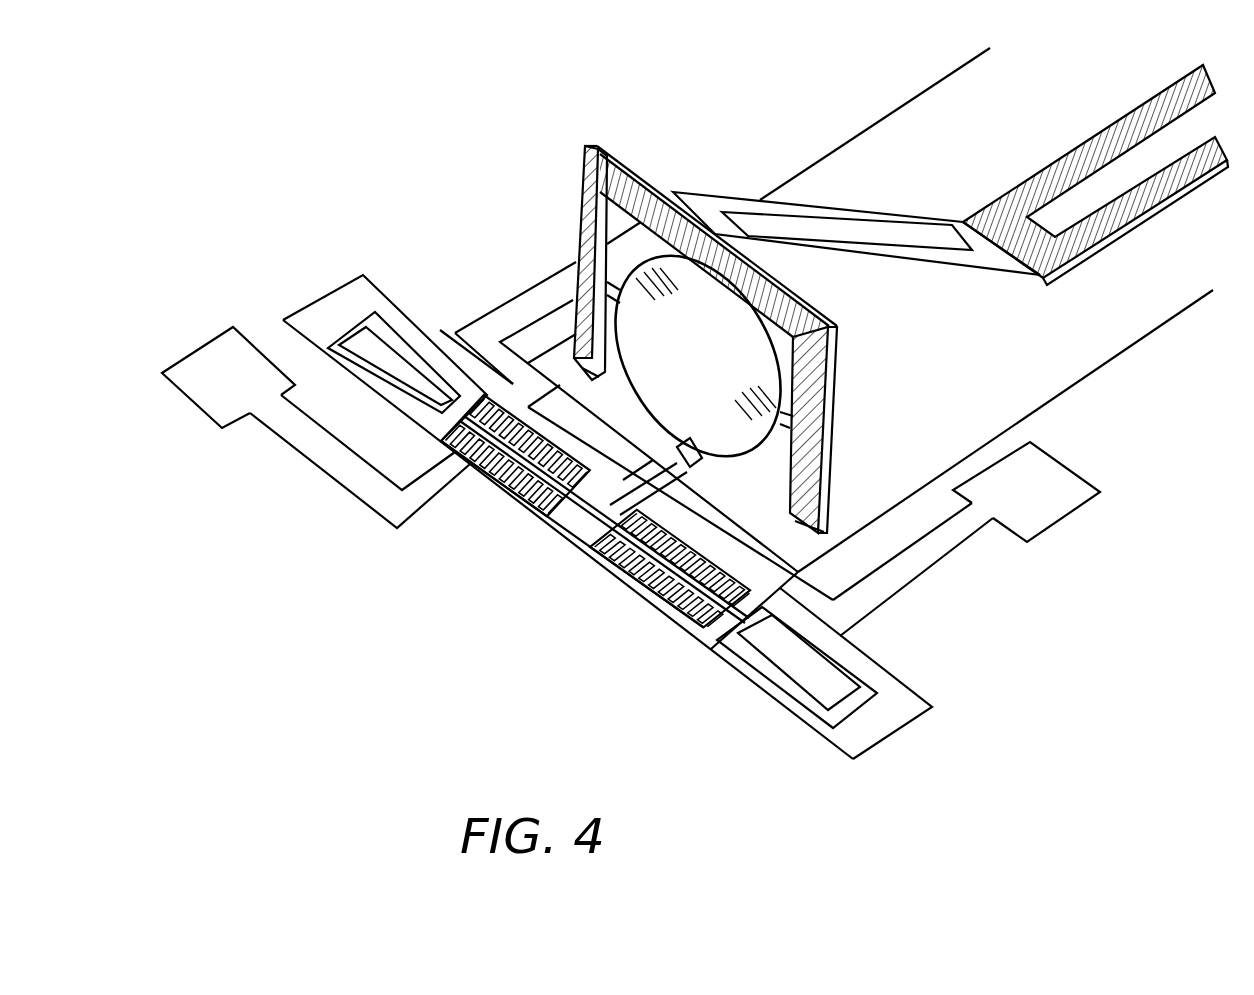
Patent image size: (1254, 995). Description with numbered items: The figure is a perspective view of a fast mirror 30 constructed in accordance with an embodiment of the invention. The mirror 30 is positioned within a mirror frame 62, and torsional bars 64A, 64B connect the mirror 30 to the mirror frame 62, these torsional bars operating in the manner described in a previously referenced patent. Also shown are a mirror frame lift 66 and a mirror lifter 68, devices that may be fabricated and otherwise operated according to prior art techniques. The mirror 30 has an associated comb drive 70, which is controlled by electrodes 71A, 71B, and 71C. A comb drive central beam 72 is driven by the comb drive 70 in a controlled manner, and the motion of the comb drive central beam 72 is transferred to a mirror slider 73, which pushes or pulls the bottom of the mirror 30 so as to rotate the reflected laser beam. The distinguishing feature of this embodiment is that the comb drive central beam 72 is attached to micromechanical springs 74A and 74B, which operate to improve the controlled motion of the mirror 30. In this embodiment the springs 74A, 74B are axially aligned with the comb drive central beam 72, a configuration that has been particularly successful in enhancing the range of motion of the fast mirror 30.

The fast mirror 30 is at (698, 355).
The mirror frame 62 is at (697, 321).
The torsional bar 64A is at (848, 430).
The torsional bar 64B is at (549, 263).
The mirror frame lift 66 is at (856, 215).
The mirror lifter 68 is at (1095, 175).
The comb drive 70 is at (621, 522).
The electrode 71A is at (1055, 503).
The electrode 71B is at (247, 393).
The electrode 71C is at (711, 223).
The comb drive central beam 72 is at (604, 519).
The mirror slider 73 is at (688, 476).
The micromechanical spring 74A is at (845, 703).
The micromechanical spring 74B is at (365, 328).